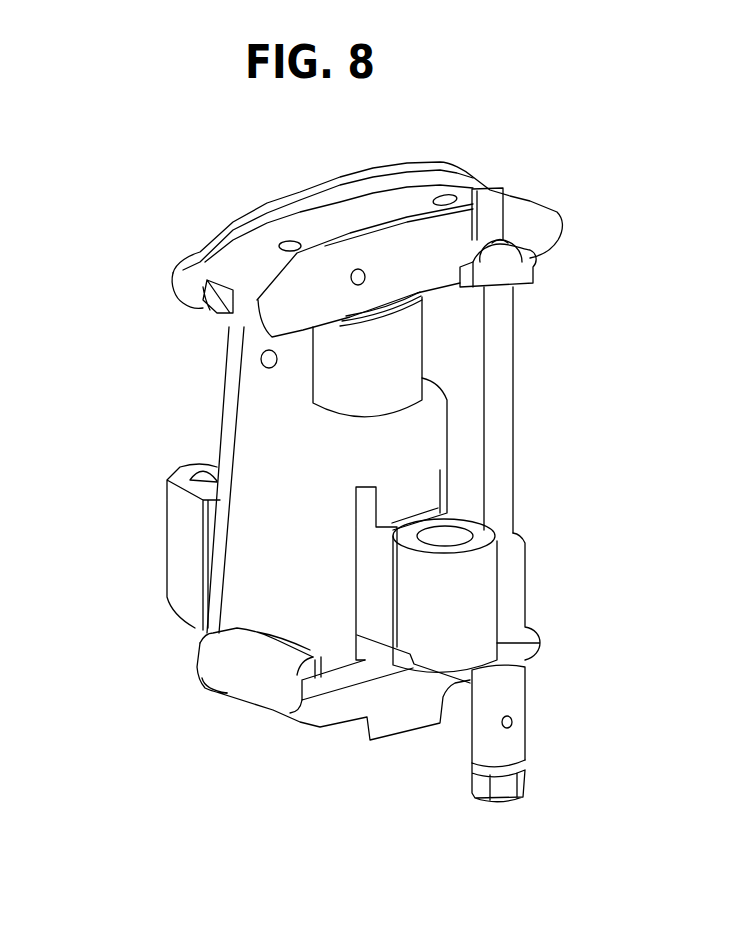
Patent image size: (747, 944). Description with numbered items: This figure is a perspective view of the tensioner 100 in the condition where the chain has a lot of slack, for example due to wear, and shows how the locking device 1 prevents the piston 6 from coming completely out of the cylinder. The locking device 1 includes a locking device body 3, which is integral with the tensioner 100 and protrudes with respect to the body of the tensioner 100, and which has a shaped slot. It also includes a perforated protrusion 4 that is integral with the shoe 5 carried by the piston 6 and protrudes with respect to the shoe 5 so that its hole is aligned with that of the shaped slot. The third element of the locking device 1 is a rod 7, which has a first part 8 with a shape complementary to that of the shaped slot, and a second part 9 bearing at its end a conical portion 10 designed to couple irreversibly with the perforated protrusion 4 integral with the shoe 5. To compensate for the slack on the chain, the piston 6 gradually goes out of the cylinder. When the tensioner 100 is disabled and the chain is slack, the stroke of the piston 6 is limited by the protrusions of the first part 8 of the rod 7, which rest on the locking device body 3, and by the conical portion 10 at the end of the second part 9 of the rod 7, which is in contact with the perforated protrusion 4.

The locking device 1 is at (630, 467).
The locking device body 3 is at (533, 650).
The perforated protrusion 4 is at (520, 277).
The shoe 5 is at (333, 227).
The piston 6 is at (353, 383).
The rod 7 is at (530, 487).
The first part 8 is at (500, 693).
The second part 9 is at (507, 370).
The conical portion 10 is at (500, 240).
The tensioner 100 is at (183, 710).